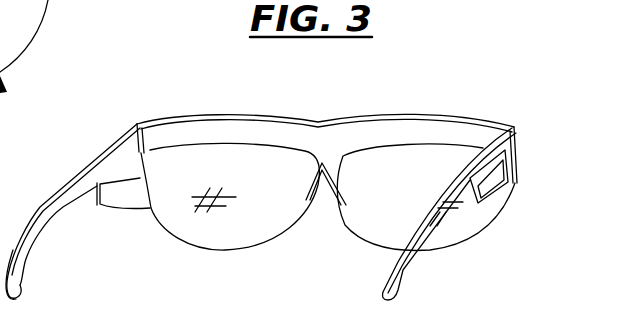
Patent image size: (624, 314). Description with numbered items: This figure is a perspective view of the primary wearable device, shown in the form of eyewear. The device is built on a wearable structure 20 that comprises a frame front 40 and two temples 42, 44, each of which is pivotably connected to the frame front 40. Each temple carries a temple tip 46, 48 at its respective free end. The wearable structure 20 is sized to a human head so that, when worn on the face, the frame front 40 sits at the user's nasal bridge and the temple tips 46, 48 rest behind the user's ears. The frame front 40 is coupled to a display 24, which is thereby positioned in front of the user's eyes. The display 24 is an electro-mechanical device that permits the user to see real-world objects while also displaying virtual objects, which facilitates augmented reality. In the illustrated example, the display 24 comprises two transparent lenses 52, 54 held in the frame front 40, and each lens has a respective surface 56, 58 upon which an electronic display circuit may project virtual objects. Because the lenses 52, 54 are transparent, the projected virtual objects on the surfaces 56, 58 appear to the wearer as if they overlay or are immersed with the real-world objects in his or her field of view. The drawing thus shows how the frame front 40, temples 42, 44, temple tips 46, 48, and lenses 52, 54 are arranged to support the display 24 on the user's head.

The wearable structure 20 is at (416, 106).
The display 24 is at (257, 146).
The frame front 40 is at (323, 122).
The temple 42 is at (415, 216).
The temple 44 is at (65, 190).
The temple tip 46 is at (392, 280).
The temple tip 48 is at (20, 283).
The transparent lens 52 is at (475, 242).
The transparent lens 54 is at (37, 47).
The surface 56 is at (475, 227).
The surface 58 is at (177, 210).